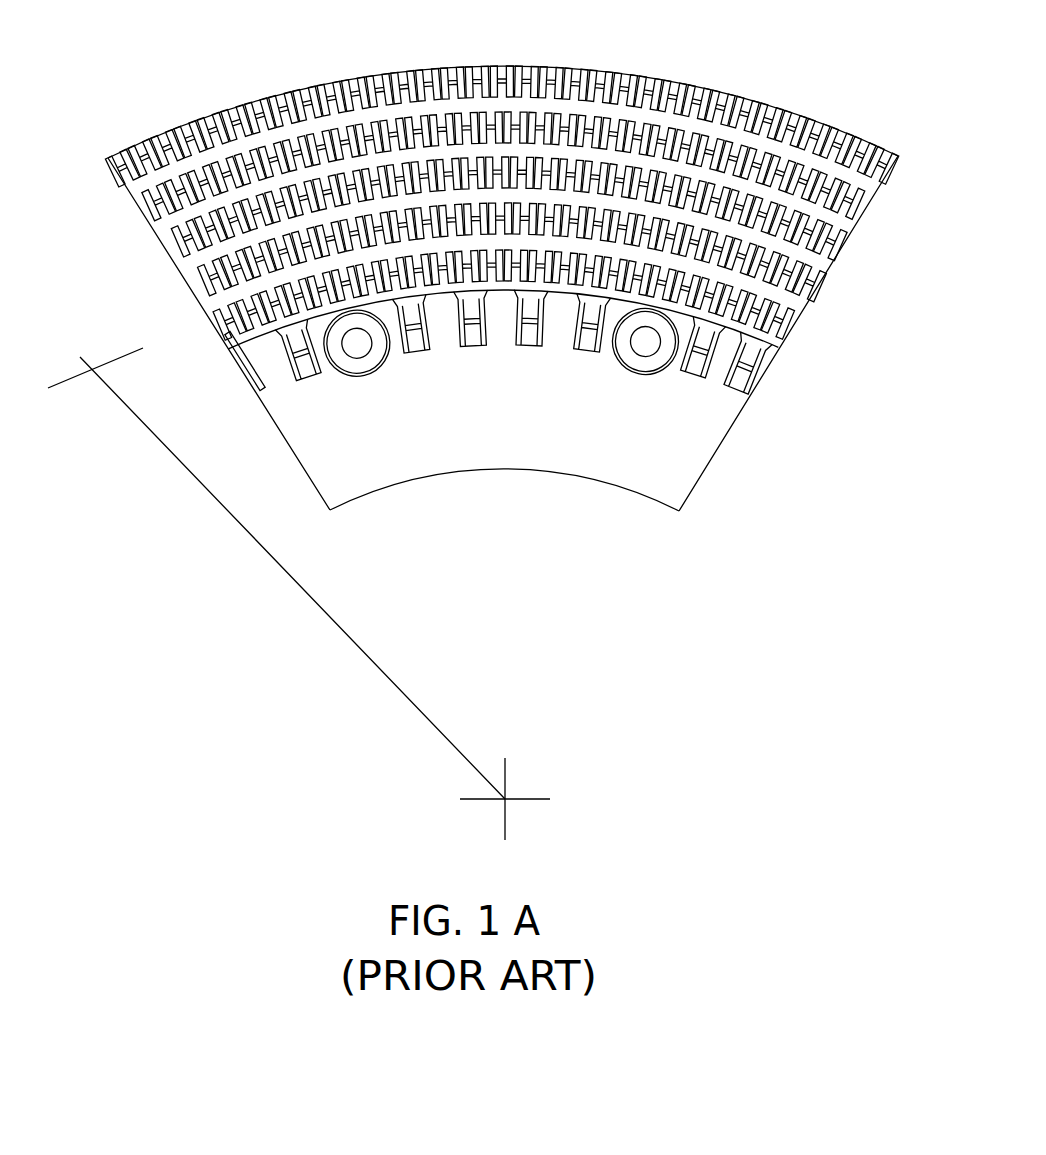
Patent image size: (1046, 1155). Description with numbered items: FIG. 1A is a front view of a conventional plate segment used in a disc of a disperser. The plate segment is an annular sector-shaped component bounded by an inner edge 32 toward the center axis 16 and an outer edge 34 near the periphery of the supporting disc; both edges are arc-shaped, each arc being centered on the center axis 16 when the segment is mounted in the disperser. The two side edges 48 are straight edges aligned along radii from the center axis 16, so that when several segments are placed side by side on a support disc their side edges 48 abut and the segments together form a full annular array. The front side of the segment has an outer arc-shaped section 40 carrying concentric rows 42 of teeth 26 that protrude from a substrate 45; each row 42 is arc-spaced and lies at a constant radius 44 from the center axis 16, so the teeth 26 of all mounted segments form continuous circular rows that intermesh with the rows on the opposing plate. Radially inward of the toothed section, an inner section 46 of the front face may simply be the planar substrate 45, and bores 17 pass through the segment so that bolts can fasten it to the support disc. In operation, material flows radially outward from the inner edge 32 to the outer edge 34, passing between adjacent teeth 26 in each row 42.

The center axis 16 is at (505, 799).
The bores 17 is at (356, 380).
The teeth 26 is at (190, 133).
The inner edge 32 is at (505, 470).
The outer edge 34 is at (505, 66).
The outer arc-shaped section 40 is at (502, 209).
The rows of teeth 42 is at (502, 205).
The constant radius 44 is at (90, 368).
The substrate 45 is at (522, 347).
The inner section 46 is at (255, 400).
The side edges 48 is at (325, 518).